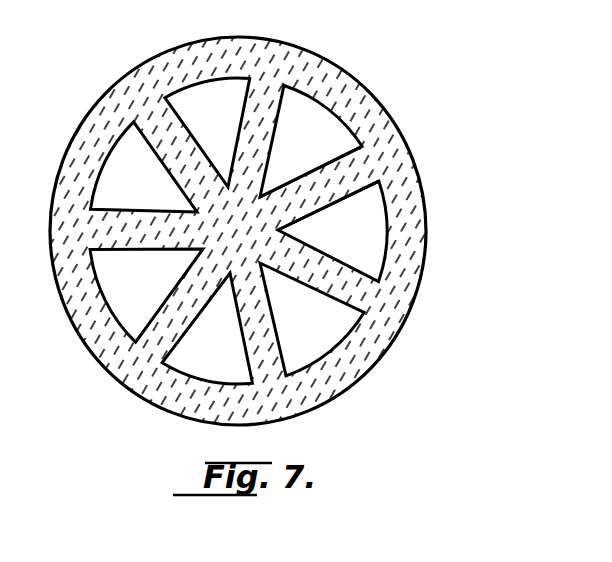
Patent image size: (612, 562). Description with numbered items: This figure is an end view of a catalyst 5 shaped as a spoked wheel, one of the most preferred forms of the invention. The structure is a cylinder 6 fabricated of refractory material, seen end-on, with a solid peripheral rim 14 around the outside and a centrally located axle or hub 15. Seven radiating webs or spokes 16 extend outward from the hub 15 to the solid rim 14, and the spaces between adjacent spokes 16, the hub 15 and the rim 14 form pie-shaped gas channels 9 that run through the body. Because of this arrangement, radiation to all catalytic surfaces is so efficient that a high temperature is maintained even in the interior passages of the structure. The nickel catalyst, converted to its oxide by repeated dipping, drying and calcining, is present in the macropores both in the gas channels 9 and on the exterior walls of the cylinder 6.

The catalyst 5 is at (450, 141).
The cylinder 6 is at (400, 333).
The gas channels 9 is at (361, 248).
The solid rim 14 is at (325, 68).
The hub 15 is at (262, 241).
The spokes 16 is at (303, 176).